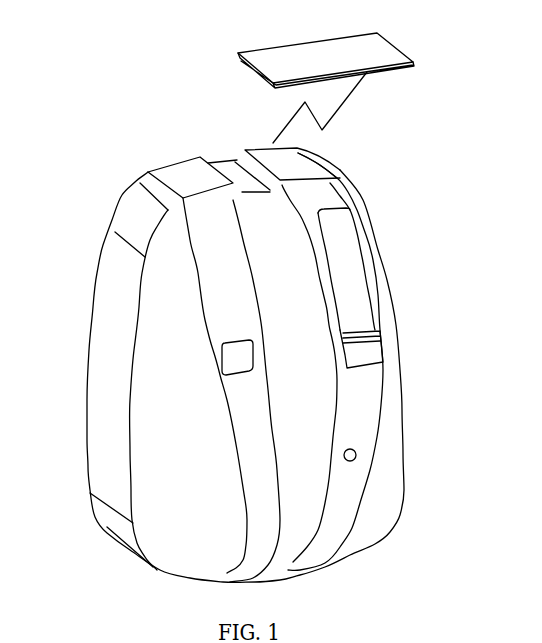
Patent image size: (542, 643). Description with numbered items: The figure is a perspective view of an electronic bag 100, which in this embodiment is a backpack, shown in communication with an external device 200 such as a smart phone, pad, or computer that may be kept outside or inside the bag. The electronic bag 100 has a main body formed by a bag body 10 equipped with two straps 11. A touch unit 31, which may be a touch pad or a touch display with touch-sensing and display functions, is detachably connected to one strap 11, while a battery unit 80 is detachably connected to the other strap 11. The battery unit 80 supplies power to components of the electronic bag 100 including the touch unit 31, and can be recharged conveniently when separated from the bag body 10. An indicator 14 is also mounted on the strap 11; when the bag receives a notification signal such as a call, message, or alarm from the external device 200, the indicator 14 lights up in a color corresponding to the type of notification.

The electronic bag 100 is at (177, 134).
The external device 200 is at (285, 58).
The bag body 10 is at (131, 214).
The strap 11 is at (352, 417).
The indicator 14 is at (356, 452).
The touch unit 31 is at (347, 330).
The battery unit 80 is at (230, 358).